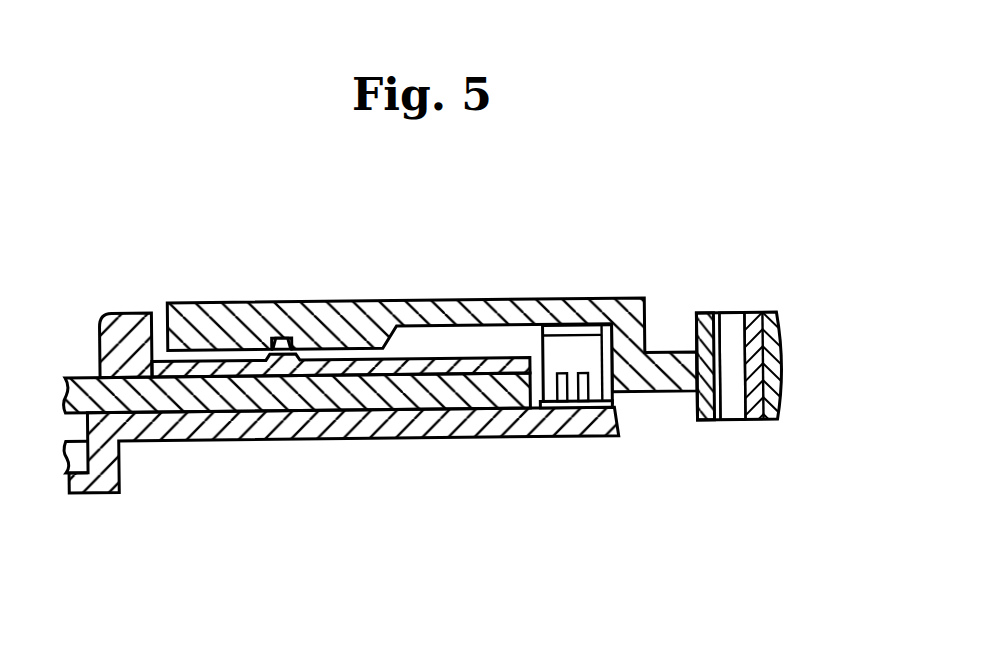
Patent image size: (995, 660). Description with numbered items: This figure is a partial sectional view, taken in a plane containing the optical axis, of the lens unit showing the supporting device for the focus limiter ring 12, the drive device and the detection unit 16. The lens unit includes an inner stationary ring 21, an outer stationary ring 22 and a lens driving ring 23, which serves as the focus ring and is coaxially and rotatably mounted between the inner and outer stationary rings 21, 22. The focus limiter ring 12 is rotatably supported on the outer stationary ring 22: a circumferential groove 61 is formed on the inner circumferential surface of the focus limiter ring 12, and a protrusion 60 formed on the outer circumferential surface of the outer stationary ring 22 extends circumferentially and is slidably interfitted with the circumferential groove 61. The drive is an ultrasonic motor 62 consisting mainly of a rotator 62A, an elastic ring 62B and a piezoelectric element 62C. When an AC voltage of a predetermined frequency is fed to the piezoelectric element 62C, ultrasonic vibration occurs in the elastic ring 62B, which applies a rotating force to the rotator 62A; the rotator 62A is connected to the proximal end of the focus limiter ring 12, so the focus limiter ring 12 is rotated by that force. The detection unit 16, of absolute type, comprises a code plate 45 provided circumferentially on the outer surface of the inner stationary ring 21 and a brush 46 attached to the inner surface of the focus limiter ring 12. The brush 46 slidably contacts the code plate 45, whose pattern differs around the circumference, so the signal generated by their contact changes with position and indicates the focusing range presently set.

The focus limiter ring 12 is at (528, 313).
The detection unit 16 is at (656, 303).
The inner stationary ring 21 is at (573, 425).
The outer stationary ring 22 is at (130, 311).
The lens driving ring 23 is at (75, 385).
The code plate 45 is at (593, 394).
The brush 46 is at (587, 332).
The protrusion 60 is at (276, 359).
The circumferential groove 61 is at (280, 337).
The ultrasonic motor 62 is at (775, 375).
The rotator 62A is at (705, 412).
The elastic ring 62B is at (732, 410).
The piezoelectric element 62C is at (752, 314).